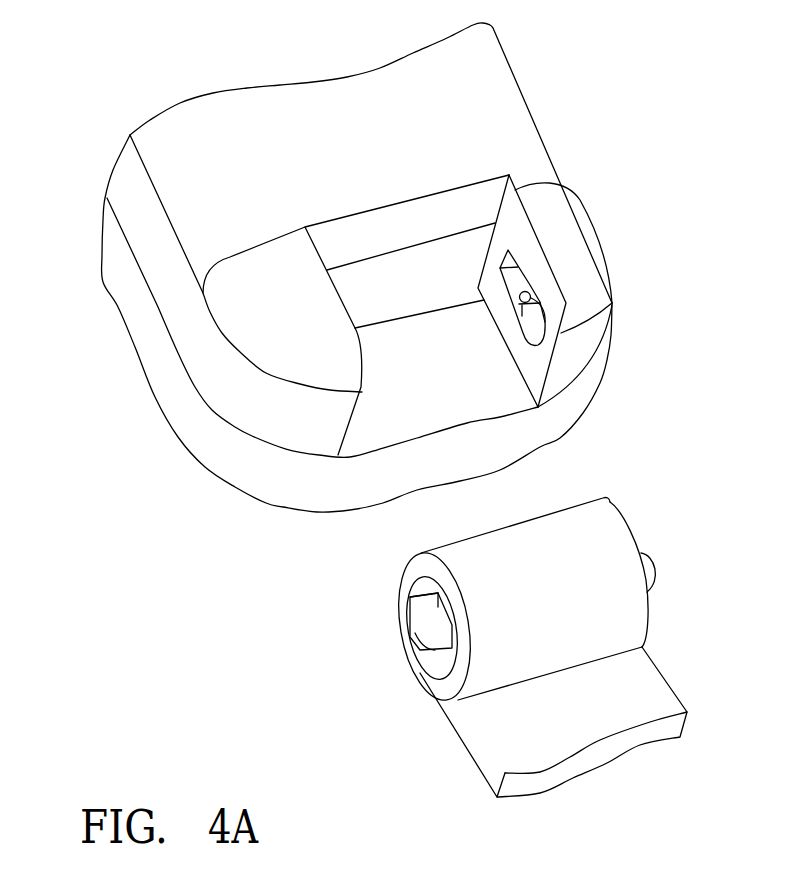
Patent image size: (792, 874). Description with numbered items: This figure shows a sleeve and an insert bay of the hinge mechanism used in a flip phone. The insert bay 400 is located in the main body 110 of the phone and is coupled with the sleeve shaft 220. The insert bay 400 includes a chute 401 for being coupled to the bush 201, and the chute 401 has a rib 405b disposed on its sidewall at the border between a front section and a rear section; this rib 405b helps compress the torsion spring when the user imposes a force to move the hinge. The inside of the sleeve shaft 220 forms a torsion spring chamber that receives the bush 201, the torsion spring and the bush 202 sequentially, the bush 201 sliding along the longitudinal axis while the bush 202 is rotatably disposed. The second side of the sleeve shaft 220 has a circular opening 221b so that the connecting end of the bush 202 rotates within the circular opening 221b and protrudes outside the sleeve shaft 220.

The main body 110 is at (478, 107).
The insert bay 400 is at (395, 373).
The chute 401 is at (525, 267).
The rib 405b is at (531, 294).
The sleeve shaft 220 is at (610, 550).
The bush 201 is at (658, 566).
The bush 202 is at (423, 637).
The circular opening 221b is at (423, 599).